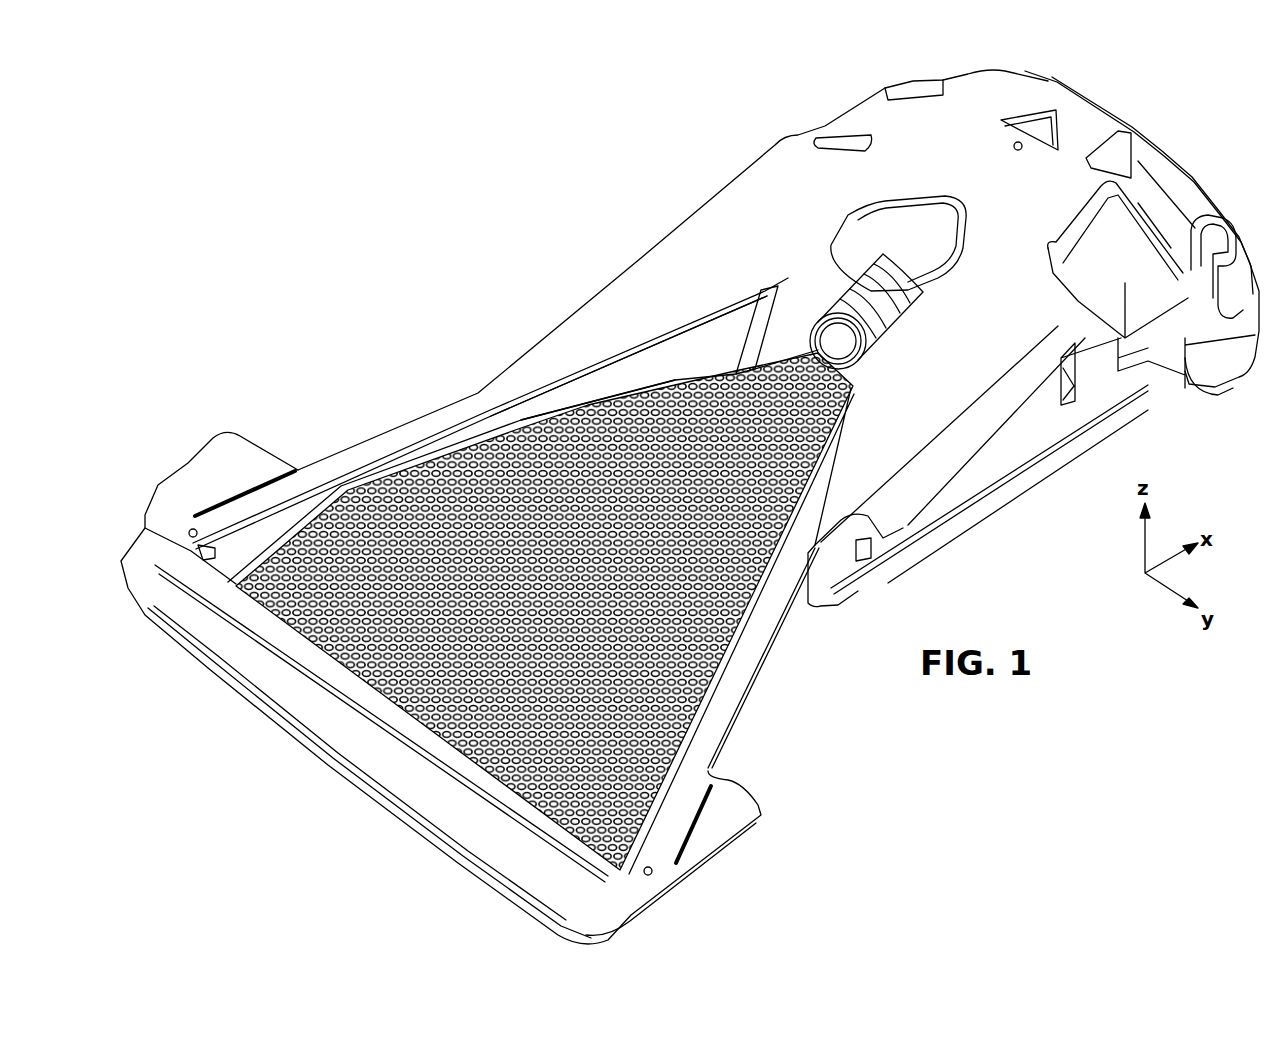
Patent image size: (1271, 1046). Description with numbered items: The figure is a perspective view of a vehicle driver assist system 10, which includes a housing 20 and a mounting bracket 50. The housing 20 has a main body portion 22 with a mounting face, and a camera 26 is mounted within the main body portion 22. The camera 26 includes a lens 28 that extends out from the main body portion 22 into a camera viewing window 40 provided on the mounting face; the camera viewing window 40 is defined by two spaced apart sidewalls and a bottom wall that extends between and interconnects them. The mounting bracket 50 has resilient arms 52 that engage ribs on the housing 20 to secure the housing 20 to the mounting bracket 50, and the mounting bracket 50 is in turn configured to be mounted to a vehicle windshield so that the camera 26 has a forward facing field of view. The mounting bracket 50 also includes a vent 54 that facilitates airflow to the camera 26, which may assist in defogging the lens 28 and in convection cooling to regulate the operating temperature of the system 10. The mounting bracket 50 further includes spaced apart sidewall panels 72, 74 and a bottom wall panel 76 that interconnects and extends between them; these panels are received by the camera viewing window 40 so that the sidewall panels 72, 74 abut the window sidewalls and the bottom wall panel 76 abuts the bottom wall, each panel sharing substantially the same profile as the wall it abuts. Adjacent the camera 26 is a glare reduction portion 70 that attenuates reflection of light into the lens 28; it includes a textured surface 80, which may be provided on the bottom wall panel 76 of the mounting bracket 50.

The vehicle driver assist system 10 is at (668, 158).
The housing 20 is at (1170, 187).
The main body portion 22 is at (1207, 330).
The camera 26 is at (828, 325).
The lens 28 is at (853, 297).
The camera viewing window 40 is at (885, 258).
The mounting bracket 50 is at (1010, 83).
The resilient arms 52 is at (1117, 260).
The vent 54 is at (603, 840).
The glare reduction portion 70 is at (478, 427).
The sidewall panel 72 is at (667, 347).
The sidewall panel 74 is at (757, 490).
The bottom wall panel 76 is at (370, 690).
The textured surface 80 is at (717, 640).